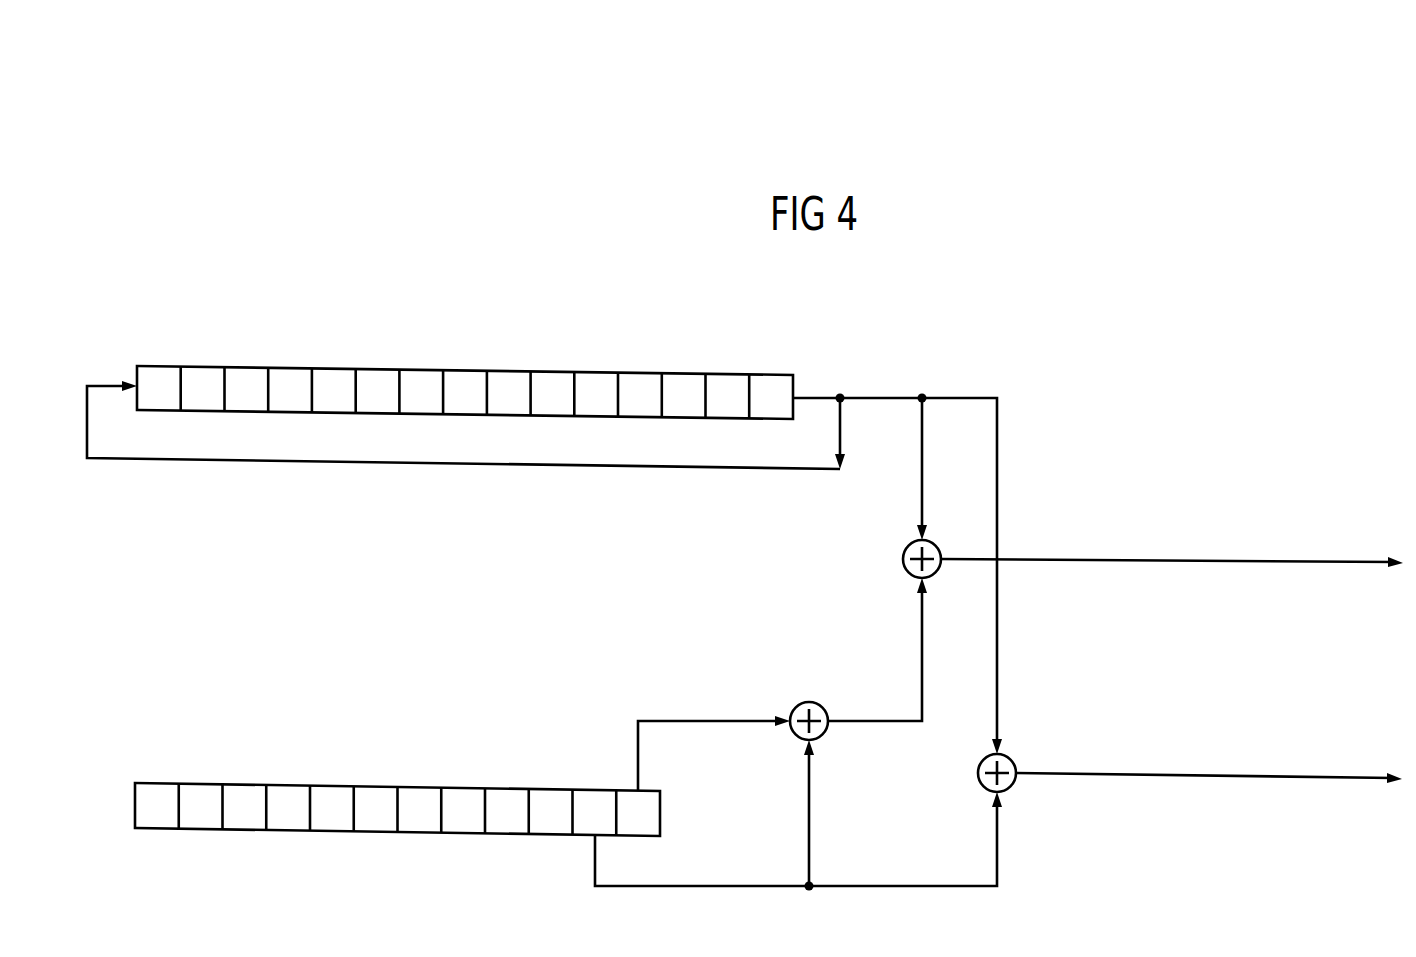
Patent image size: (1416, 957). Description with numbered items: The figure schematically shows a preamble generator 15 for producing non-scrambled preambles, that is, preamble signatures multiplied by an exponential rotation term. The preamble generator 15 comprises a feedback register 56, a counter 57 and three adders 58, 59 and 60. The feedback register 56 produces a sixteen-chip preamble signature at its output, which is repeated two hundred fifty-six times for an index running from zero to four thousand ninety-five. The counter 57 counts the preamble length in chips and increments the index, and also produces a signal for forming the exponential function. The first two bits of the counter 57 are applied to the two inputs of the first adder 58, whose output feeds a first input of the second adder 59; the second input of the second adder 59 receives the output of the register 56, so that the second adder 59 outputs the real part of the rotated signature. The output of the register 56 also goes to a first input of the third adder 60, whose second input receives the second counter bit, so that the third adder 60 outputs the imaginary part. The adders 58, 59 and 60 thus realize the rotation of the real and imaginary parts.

The preamble generator 15 is at (487, 633).
The feedback register 56 is at (553, 372).
The counter 57 is at (378, 835).
The first adder 58 is at (796, 707).
The second adder 59 is at (903, 559).
The third adder 60 is at (1008, 788).